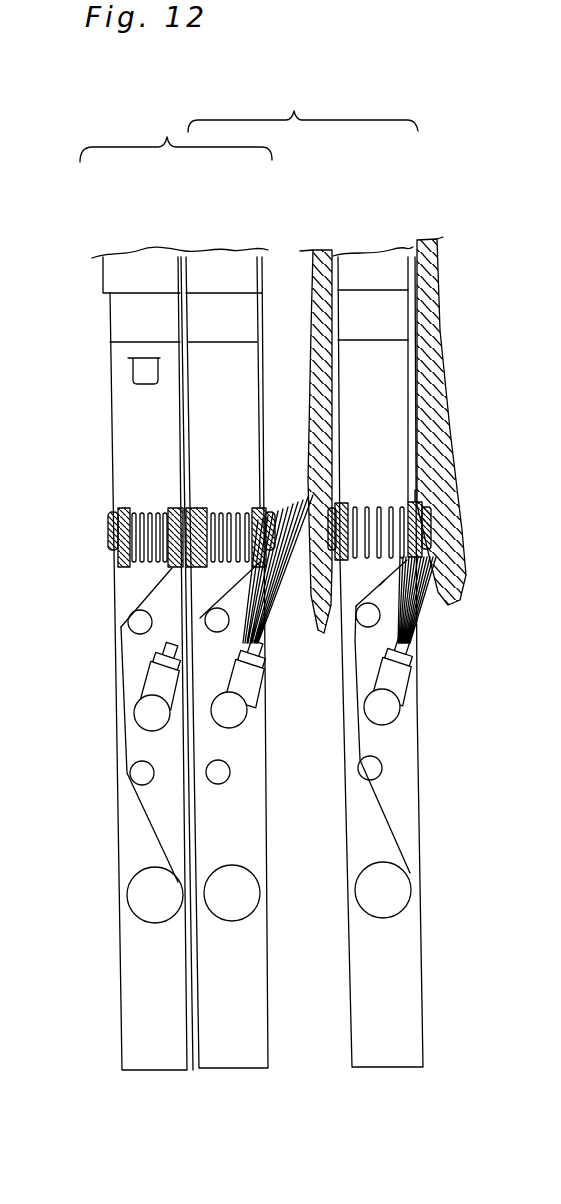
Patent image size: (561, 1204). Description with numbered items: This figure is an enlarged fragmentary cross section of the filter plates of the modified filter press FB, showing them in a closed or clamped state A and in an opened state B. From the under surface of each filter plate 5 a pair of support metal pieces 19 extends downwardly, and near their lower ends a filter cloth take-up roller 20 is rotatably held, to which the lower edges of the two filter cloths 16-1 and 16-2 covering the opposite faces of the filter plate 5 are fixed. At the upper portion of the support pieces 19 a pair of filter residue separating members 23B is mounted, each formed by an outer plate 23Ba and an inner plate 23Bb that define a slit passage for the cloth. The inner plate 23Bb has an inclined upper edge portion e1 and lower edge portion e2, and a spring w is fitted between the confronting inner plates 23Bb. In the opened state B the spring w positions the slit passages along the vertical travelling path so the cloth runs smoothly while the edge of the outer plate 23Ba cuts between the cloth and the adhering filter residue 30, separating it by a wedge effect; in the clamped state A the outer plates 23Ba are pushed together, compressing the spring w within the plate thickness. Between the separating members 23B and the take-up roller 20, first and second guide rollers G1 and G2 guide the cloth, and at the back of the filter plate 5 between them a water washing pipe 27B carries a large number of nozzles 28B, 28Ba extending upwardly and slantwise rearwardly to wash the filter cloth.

The filter plate 5 is at (125, 268).
The filter residue 30 is at (314, 286).
The support metal pieces 19 is at (156, 1073).
The filter cloth take-up roller 20 is at (140, 898).
The filter residue separating member 23B is at (105, 536).
The outer plate 23Ba is at (111, 515).
The inner plate 23Bb is at (122, 510).
The spring w is at (157, 508).
The filter cloth 16-1 is at (117, 596).
The filter cloth 16-2 is at (152, 580).
The first guide roller G1 is at (128, 624).
The second guide roller G2 is at (135, 777).
The water washing pipe 27B is at (147, 720).
The nozzle 28B is at (233, 712).
The nozzles 28Ba is at (137, 675).
The upper edge portion e1 is at (417, 500).
The lower edge portion e2 is at (385, 580).
The filter press FB is at (412, 91).
The closed or clamped state A is at (176, 135).
The opened state B is at (303, 108).